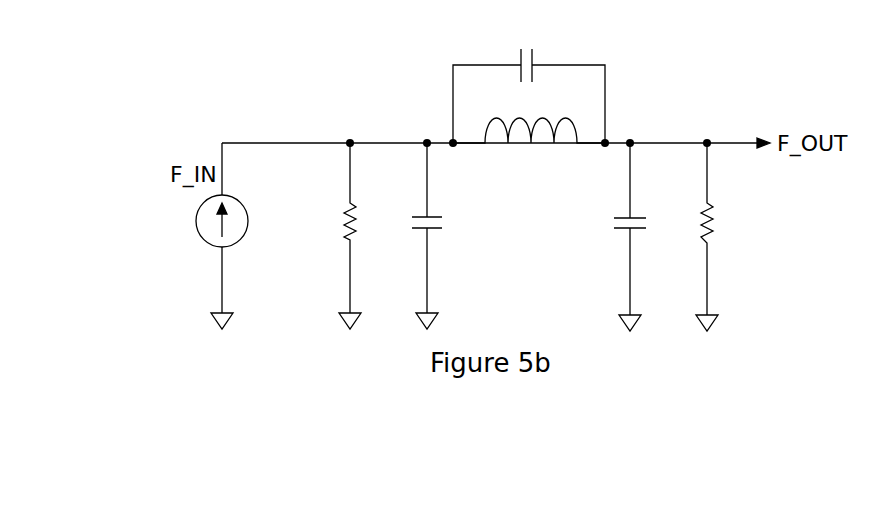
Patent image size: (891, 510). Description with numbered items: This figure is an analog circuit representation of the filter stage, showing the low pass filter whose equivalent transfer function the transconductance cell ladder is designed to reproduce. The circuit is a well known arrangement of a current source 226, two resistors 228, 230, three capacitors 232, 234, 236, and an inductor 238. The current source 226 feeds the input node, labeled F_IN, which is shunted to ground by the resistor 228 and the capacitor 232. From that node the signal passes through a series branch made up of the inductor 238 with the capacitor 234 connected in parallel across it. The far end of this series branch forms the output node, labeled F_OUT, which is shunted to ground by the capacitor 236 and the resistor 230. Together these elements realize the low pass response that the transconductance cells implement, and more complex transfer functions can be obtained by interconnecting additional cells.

The current source 226 is at (196, 223).
The resistor 228 is at (345, 230).
The resistor 230 is at (712, 232).
The capacitor 232 is at (443, 225).
The capacitor 234 is at (519, 58).
The capacitor 236 is at (613, 225).
The inductor 238 is at (520, 146).